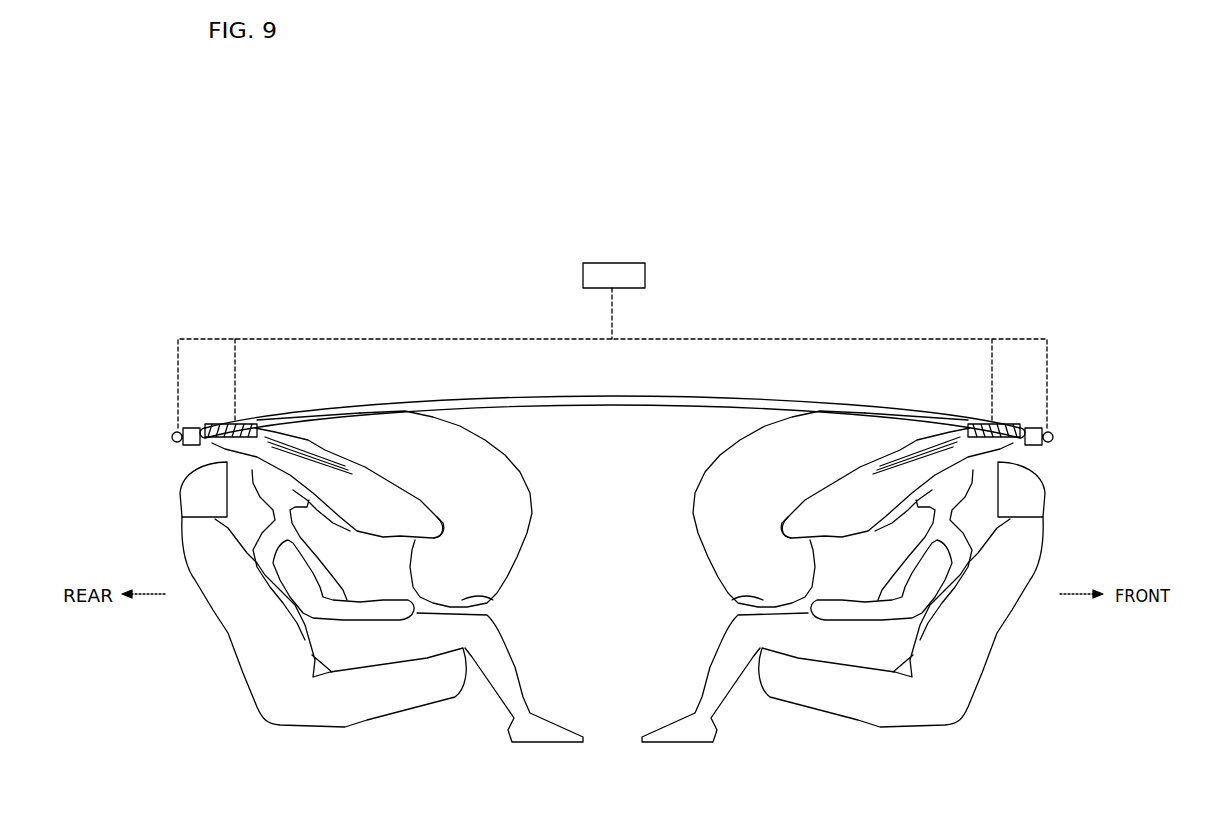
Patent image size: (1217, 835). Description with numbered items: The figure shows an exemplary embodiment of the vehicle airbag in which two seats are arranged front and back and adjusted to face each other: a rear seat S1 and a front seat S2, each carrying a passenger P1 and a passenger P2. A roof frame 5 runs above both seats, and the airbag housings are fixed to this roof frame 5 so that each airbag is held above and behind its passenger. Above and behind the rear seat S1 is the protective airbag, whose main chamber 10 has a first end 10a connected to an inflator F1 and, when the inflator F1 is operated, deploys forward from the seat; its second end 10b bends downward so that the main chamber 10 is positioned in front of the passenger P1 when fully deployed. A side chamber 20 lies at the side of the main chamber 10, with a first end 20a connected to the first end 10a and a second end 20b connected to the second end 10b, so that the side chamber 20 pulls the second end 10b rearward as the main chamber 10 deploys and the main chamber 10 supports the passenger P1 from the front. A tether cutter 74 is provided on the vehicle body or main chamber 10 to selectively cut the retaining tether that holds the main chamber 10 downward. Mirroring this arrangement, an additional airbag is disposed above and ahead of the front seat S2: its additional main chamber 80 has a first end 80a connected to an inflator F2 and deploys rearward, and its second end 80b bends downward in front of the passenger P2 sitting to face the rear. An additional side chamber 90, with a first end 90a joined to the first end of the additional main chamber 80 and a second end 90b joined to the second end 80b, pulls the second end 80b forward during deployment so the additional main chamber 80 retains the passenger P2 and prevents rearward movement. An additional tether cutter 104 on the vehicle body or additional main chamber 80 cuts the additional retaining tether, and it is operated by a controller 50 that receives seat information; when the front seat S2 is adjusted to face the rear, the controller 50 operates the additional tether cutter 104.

The roof frame 5 is at (614, 410).
The main chamber 10 is at (517, 519).
The first end of the main chamber 10a is at (233, 417).
The second end of the main chamber 10b is at (483, 600).
The side chamber 20 is at (300, 462).
The first end of the side chamber 20a is at (205, 455).
The second end of the side chamber 20b is at (443, 525).
The controller 50 is at (614, 262).
The tether cutter 74 is at (205, 425).
The additional main chamber 80 is at (708, 519).
The first end of the additional main chamber 80a is at (992, 417).
The second end of the additional main chamber 80b is at (742, 600).
The additional side chamber 90 is at (925, 462).
The first end of the additional side chamber 90a is at (1020, 455).
The second end of the additional side chamber 90b is at (782, 525).
The additional tether cutter 104 is at (1000, 428).
The inflator F1 is at (170, 436).
The inflator F2 is at (1055, 436).
The passenger P1 is at (350, 637).
The passenger P2 is at (875, 637).
The rear seat S1 is at (243, 632).
The front seat S2 is at (982, 632).